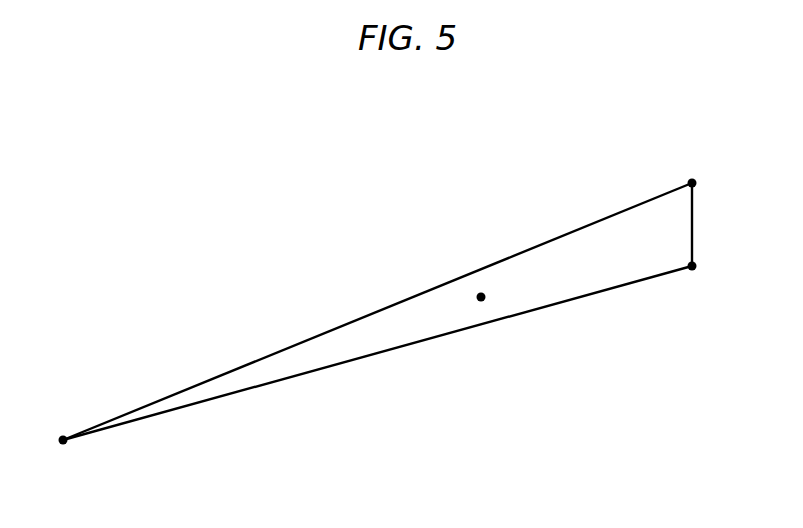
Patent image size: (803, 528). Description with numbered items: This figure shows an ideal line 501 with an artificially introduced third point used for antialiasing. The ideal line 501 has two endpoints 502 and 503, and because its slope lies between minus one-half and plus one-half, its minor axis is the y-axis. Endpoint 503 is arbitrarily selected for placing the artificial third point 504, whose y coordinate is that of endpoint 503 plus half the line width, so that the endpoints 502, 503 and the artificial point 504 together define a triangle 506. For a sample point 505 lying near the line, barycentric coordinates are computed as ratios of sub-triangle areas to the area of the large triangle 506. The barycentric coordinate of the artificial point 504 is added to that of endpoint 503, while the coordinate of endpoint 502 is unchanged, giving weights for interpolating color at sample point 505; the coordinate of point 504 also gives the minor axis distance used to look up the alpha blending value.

The ideal line 501 is at (430, 340).
The endpoint 502 is at (60, 443).
The endpoint 503 is at (696, 268).
The artificial third point 504 is at (692, 180).
The sample point 505 is at (481, 293).
The triangle region 506 is at (618, 268).